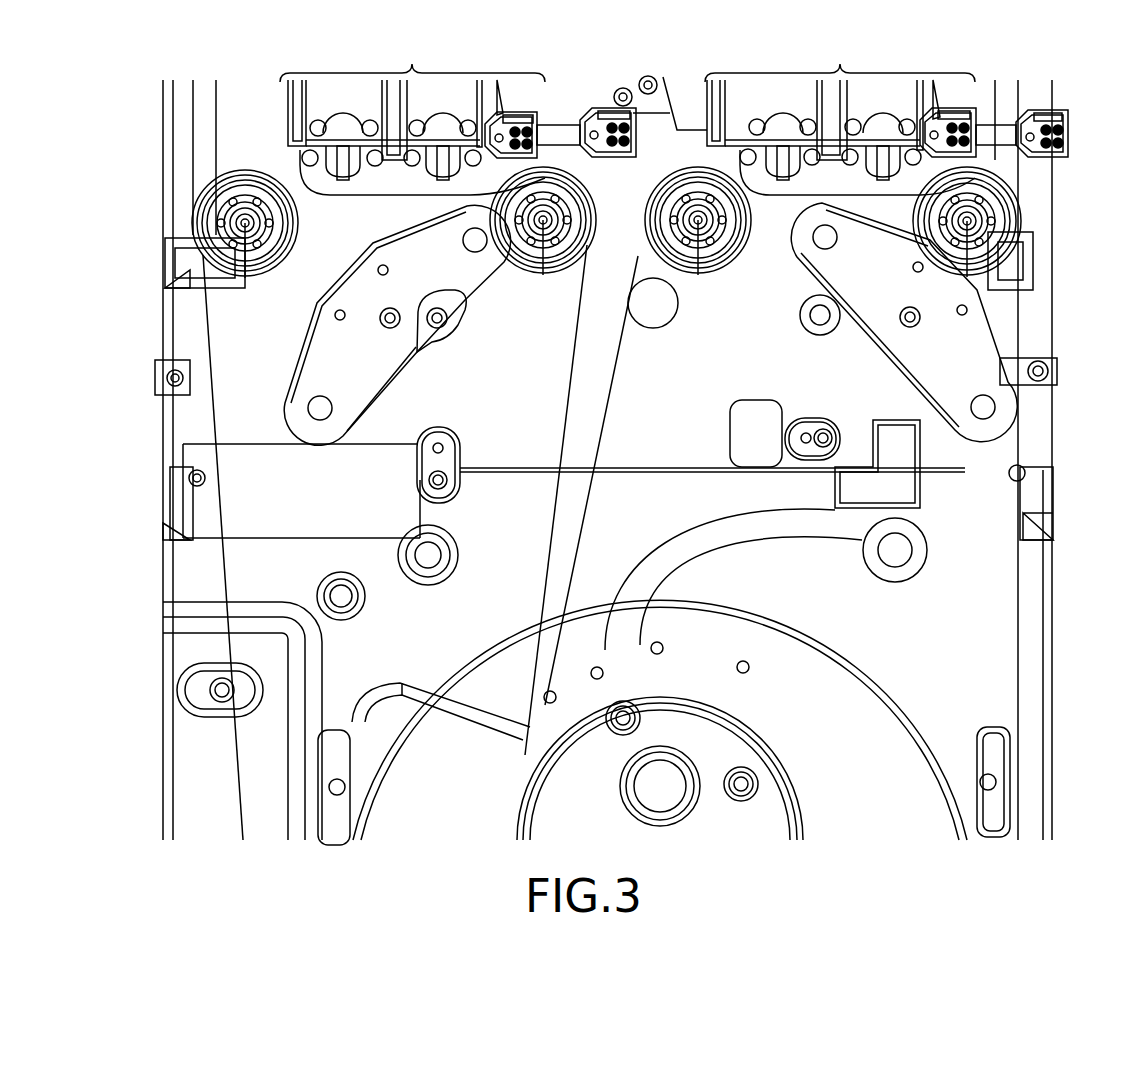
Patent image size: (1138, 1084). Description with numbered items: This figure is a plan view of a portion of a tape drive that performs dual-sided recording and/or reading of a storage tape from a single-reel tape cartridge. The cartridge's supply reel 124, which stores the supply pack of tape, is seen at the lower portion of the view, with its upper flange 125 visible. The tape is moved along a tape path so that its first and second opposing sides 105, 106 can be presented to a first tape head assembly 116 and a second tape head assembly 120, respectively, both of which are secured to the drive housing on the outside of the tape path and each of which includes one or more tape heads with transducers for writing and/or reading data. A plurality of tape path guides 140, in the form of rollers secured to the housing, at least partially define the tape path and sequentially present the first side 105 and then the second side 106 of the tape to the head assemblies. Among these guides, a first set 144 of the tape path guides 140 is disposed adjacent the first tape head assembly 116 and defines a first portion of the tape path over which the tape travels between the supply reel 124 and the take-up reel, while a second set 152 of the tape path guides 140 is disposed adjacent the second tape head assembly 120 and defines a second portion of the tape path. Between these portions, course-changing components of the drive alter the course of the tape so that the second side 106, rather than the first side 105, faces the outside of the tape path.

The first side 105 is at (295, 175).
The second side 106 is at (303, 185).
The first tape head assembly 116 is at (458, 116).
The second tape head assembly 120 is at (886, 115).
The supply reel 124 is at (926, 599).
The upper flange 125 is at (739, 718).
The tape path guides 140 is at (255, 288).
The first set of tape path guides 144 is at (548, 282).
The second set of tape path guides 152 is at (735, 284).